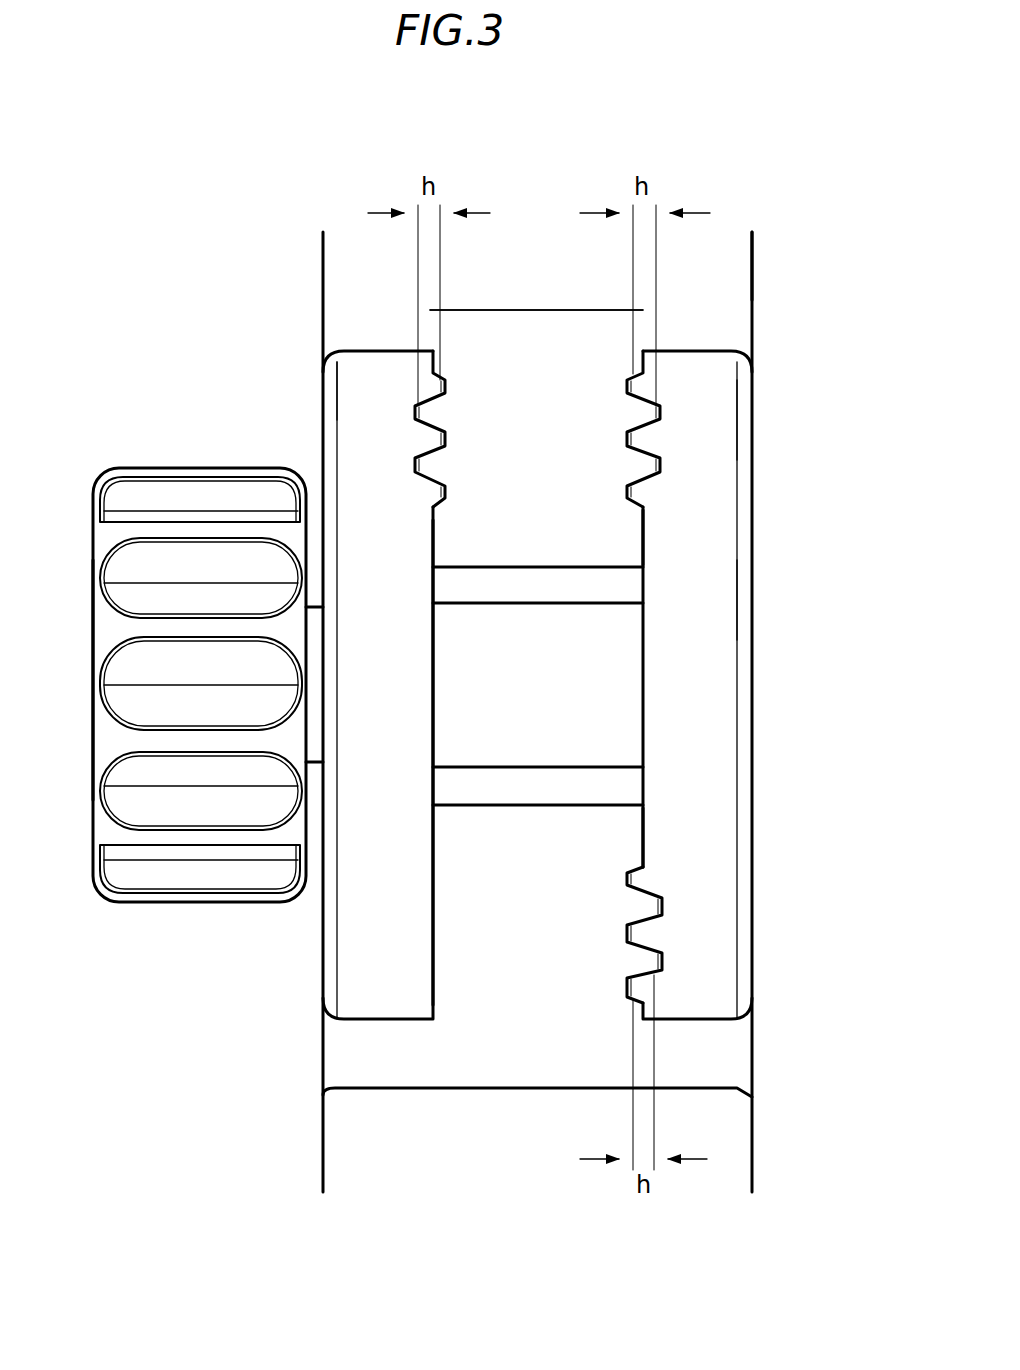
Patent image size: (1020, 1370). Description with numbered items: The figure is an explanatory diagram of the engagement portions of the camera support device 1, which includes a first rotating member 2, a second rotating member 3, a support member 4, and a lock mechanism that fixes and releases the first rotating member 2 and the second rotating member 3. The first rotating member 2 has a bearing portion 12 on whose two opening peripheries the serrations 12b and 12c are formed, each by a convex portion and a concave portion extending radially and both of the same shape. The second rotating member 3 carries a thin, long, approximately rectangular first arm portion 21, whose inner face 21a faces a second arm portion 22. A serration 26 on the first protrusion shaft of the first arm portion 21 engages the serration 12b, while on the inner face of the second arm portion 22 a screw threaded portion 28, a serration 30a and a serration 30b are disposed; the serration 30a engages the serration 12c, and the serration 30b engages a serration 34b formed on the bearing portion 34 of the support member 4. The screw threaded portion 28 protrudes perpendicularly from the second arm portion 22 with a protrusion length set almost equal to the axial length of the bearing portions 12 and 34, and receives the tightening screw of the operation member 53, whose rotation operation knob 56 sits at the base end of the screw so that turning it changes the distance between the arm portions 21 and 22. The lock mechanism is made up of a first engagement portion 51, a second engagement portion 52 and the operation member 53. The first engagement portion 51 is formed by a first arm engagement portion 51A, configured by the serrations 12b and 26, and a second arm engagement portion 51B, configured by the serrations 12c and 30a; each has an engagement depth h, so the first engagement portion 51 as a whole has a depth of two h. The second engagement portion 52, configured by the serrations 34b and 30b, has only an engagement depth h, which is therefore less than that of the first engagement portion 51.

The camera support device 1 is at (775, 170).
The first rotating member 2 is at (596, 270).
The second rotating member 3 is at (788, 606).
The support member 4 is at (298, 1142).
The bearing portion 12 is at (532, 340).
The serration 12b is at (412, 412).
The serration 12c is at (667, 413).
The first arm portion 21 is at (353, 952).
The inner face 21a is at (430, 732).
The second arm portion 22 is at (712, 760).
The serration 26 is at (450, 388).
The screw threaded portion 28 is at (575, 685).
The serration 30a is at (627, 500).
The serration 30b is at (625, 875).
The bearing portion 34 is at (453, 965).
The serration 34b is at (664, 903).
The first engagement portion 51 is at (360, 294).
The first arm engagement portion 51A is at (374, 397).
The second arm engagement portion 51B is at (679, 431).
The second engagement portion 52 is at (688, 972).
The operation member 53 is at (120, 426).
The rotation operation knob 56 is at (120, 660).